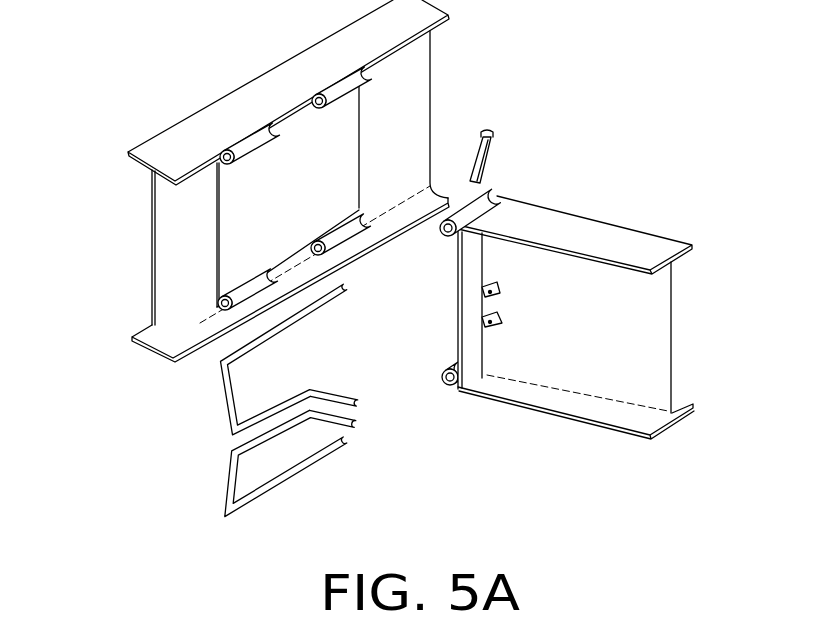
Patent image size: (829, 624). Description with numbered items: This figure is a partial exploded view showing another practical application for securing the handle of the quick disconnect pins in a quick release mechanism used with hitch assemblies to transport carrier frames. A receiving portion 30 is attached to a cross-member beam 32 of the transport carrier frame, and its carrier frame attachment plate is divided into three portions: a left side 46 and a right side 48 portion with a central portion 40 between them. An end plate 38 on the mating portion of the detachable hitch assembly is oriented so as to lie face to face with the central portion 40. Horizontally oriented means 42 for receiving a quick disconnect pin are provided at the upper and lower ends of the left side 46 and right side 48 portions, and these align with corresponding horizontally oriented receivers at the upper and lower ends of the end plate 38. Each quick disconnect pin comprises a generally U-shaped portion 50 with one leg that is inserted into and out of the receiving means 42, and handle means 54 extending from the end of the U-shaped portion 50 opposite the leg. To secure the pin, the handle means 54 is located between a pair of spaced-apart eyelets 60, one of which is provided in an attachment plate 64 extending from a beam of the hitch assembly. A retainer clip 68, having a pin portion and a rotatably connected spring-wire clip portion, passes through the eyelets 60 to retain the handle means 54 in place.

The receiving portion 30 is at (258, 181).
The cross-member beam 32 is at (394, 41).
The end plate 38 is at (532, 304).
The central portion 40 is at (258, 170).
The means for receiving a quick disconnect pin 42 is at (247, 143).
The left side portion 46 is at (237, 215).
The right side portion 48 is at (345, 153).
The U-shaped portion 50 is at (302, 405).
The handle means 54 is at (343, 393).
The eyelets 60 is at (490, 290).
The attachment plate 64 is at (490, 322).
The retainer clip 68 is at (530, 143).